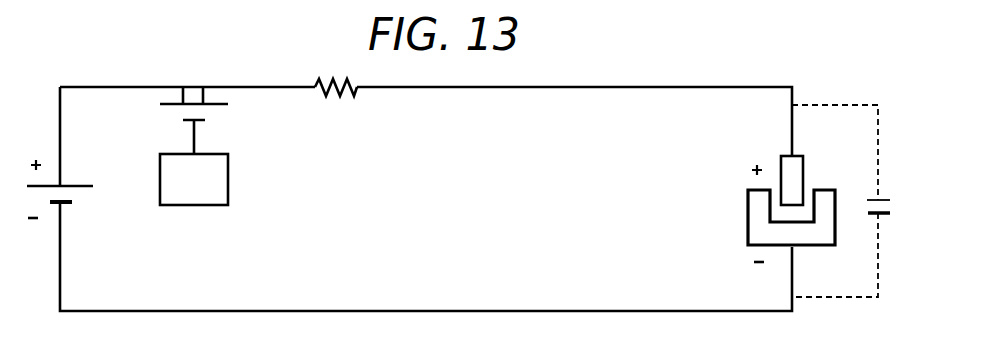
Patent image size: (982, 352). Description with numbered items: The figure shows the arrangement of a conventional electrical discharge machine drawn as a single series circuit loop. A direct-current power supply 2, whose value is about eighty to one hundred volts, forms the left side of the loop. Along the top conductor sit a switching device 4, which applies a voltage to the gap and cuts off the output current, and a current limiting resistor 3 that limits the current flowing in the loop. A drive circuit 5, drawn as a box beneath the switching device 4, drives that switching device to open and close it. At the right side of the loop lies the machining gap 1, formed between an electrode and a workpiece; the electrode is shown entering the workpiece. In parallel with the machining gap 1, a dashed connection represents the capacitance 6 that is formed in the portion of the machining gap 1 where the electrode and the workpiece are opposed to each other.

The machining gap 1 is at (804, 160).
The direct-current power supply 2 is at (78, 180).
The current limiting resistor 3 is at (337, 104).
The switching device 4 is at (228, 116).
The drive circuit 5 is at (228, 173).
The capacitance 6 is at (892, 200).